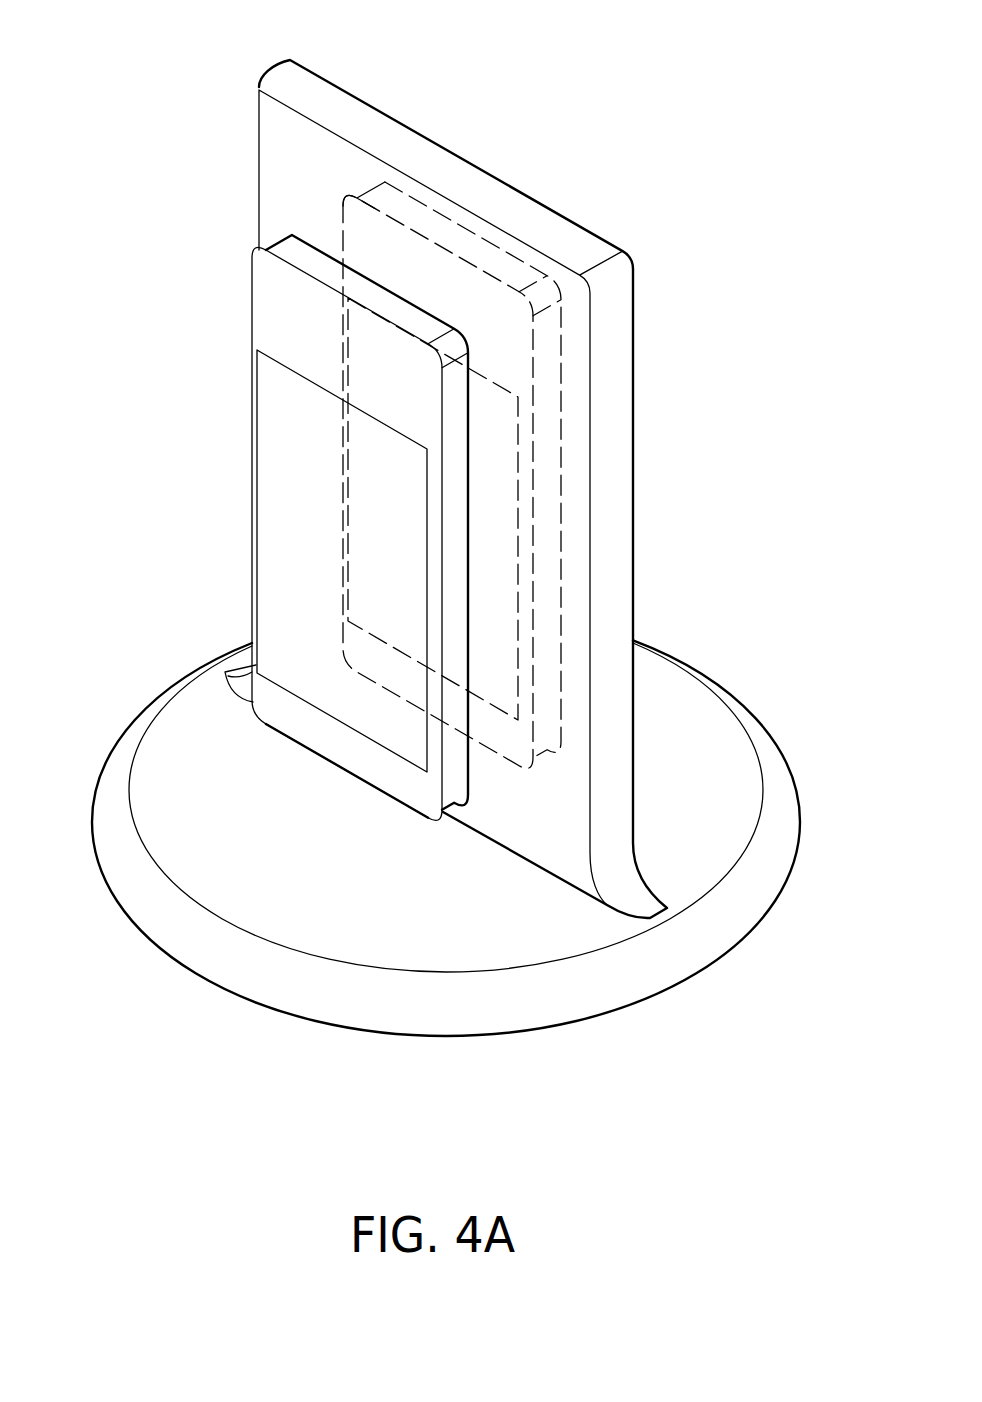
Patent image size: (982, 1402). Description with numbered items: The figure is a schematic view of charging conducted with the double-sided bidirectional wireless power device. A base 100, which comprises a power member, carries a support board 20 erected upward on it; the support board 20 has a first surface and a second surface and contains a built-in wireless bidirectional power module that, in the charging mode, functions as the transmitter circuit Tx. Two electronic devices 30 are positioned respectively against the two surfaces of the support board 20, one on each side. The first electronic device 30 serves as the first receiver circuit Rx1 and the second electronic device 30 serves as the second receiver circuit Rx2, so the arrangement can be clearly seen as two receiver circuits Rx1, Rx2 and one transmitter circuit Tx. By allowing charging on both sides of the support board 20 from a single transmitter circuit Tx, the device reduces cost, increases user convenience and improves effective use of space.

The support board 20 is at (347, 112).
The electronic device 30 is at (272, 313).
The base 100 is at (216, 935).
The transmitter circuit Tx is at (307, 168).
The first receiver circuit Rx1 is at (295, 520).
The second receiver circuit Rx2 is at (520, 545).